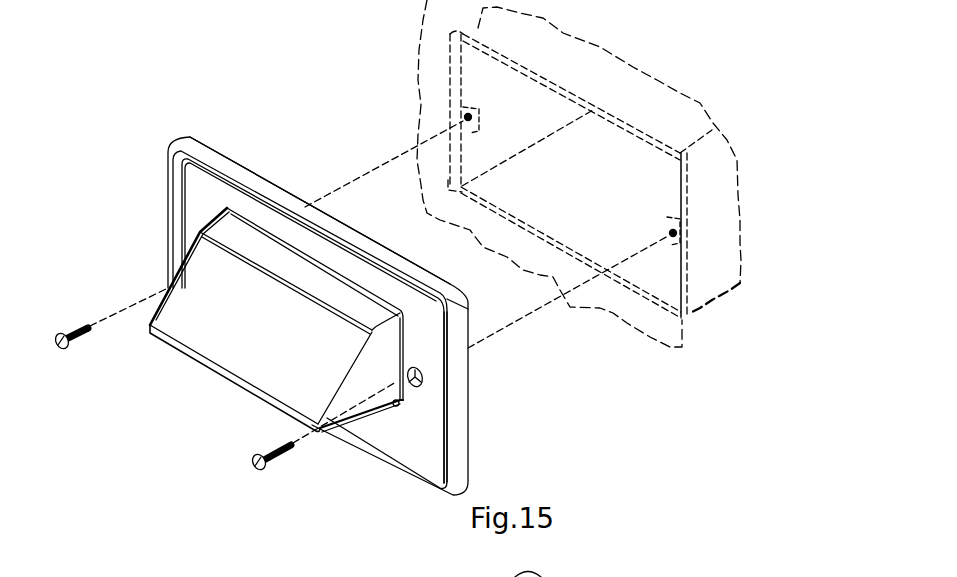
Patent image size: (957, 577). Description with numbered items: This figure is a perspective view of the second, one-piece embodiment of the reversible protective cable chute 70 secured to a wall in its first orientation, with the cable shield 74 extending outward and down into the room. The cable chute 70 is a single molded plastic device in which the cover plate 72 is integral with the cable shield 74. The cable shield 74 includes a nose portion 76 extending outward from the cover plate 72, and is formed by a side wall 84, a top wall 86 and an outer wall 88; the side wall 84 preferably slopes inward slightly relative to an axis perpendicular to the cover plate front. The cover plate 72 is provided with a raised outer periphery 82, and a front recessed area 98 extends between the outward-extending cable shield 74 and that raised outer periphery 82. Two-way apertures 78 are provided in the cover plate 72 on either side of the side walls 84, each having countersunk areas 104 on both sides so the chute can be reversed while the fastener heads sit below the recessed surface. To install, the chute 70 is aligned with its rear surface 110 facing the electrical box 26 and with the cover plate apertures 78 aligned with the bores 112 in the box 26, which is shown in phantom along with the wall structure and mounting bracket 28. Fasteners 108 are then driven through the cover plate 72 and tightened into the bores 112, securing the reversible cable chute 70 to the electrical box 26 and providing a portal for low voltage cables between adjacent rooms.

The electrical box 26 is at (712, 305).
The mounting bracket 28 is at (465, 25).
The reversible protective cable chute 70 is at (137, 180).
The cover plate 72 is at (468, 395).
The cable shield 74 is at (251, 320).
The nose portion 76 is at (230, 380).
The two-way aperture 78 is at (423, 373).
The raised outer periphery 82 is at (233, 177).
The side wall 84 is at (395, 371).
The top wall 86 is at (311, 281).
The outer wall 88 is at (278, 331).
The front recessed area 98 is at (440, 333).
The countersunk area 104 is at (413, 387).
The fastener 108 is at (277, 462).
The rear surface 110 is at (328, 212).
The bore 112 is at (465, 117).